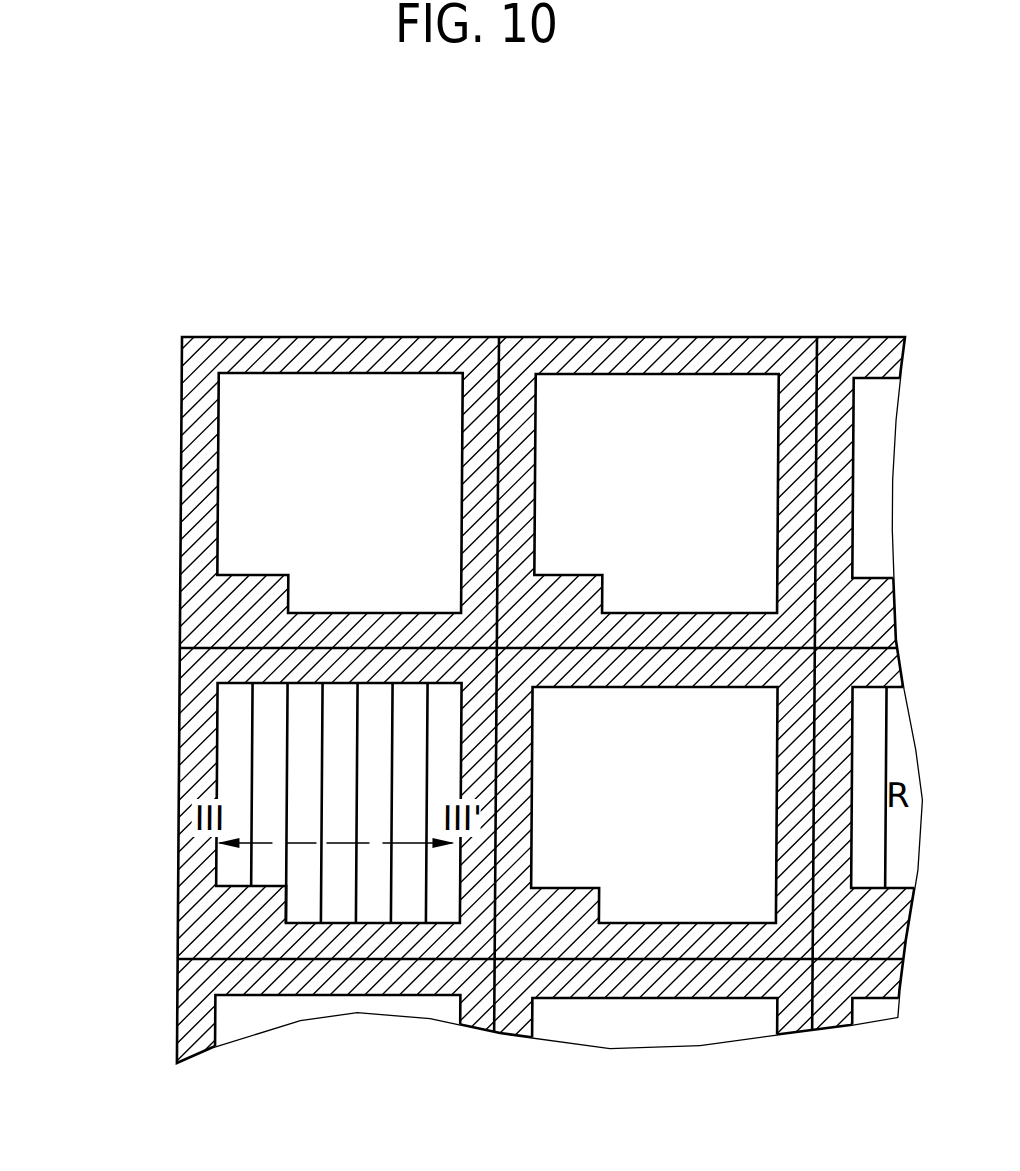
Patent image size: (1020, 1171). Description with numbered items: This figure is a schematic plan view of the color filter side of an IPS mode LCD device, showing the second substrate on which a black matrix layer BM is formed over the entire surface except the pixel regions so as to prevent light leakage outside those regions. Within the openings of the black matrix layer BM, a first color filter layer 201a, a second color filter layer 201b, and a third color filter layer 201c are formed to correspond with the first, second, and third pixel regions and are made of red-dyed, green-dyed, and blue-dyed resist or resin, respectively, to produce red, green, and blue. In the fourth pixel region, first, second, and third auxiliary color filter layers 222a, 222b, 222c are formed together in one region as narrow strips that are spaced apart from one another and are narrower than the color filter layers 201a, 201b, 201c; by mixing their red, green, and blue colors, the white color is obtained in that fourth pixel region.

The first color filter layer 201a is at (332, 392).
The second color filter layer 201b is at (672, 392).
The third color filter layer 201c is at (705, 887).
The black matrix layer BM is at (480, 358).
The first auxiliary color filter layer 222a is at (270, 868).
The second auxiliary color filter layer 222b is at (337, 905).
The third auxiliary color filter layer 222c is at (403, 905).